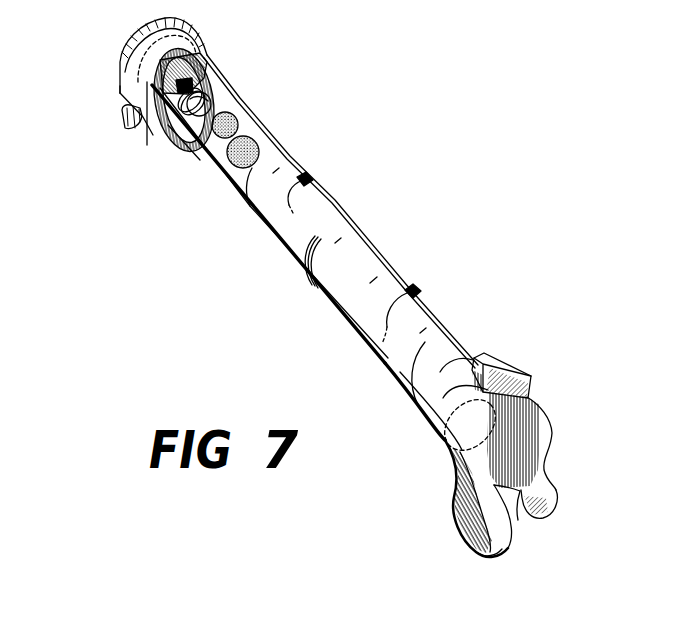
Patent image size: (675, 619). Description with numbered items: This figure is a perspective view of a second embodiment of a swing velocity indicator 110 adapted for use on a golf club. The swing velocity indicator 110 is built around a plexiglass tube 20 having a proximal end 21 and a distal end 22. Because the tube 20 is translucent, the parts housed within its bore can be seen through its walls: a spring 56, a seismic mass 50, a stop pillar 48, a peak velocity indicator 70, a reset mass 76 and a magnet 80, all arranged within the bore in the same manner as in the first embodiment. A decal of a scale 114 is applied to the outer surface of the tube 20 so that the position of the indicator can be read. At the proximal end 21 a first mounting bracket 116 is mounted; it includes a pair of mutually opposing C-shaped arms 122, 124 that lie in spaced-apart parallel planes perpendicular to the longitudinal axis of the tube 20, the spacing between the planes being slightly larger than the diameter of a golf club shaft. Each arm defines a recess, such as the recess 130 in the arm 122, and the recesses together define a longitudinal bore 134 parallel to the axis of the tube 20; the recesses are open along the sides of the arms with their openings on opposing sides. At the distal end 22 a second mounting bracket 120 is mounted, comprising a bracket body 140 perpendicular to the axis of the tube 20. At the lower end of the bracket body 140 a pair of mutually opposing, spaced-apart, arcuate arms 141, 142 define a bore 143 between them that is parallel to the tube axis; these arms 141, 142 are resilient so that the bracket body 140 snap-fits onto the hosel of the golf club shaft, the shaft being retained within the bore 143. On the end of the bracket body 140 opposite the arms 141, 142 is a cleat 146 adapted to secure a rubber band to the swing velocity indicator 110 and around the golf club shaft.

The tube 20 is at (381, 249).
The proximal end 21 is at (182, 15).
The distal end 22 is at (560, 468).
The stop pillar 48 is at (212, 80).
The seismic mass 50 is at (225, 100).
The spring 56 is at (198, 70).
The peak velocity indicator 70 is at (258, 123).
The reset mass 76 is at (428, 421).
The magnet 80 is at (443, 448).
The swing velocity indicator 110 is at (374, 112).
The scale 114 is at (303, 206).
The first mounting bracket 116 is at (100, 80).
The second mounting bracket 120 is at (465, 547).
The C-shaped arm 122 is at (137, 116).
The C-shaped arm 124 is at (167, 148).
The recess 130 is at (121, 97).
The longitudinal bore 134 is at (188, 150).
The bracket body 140 is at (541, 440).
The arcuate arm 141 is at (492, 553).
The arcuate arm 142 is at (548, 512).
The bore 143 is at (522, 533).
The cleat 146 is at (504, 368).